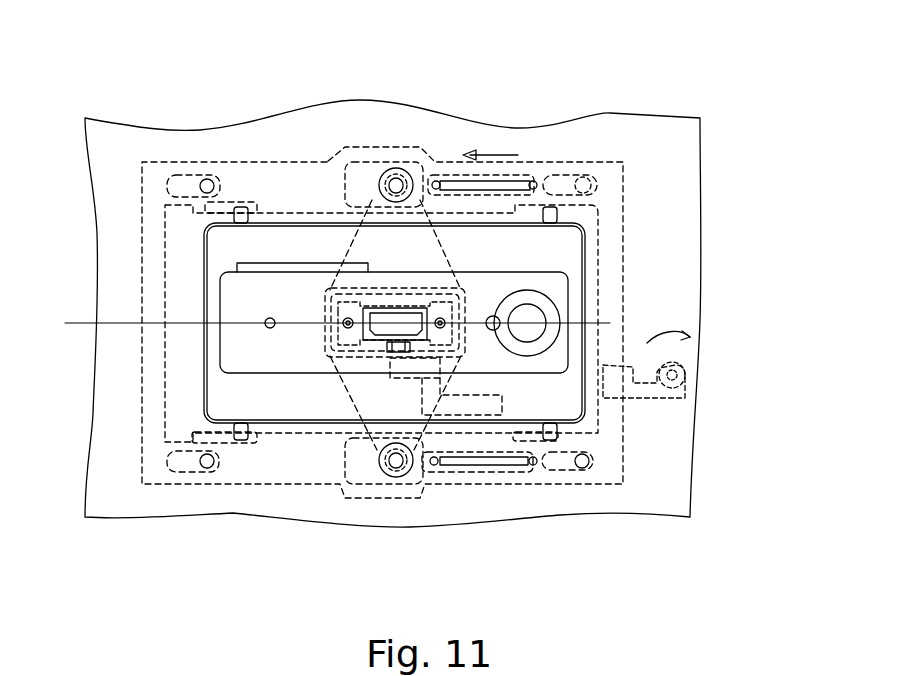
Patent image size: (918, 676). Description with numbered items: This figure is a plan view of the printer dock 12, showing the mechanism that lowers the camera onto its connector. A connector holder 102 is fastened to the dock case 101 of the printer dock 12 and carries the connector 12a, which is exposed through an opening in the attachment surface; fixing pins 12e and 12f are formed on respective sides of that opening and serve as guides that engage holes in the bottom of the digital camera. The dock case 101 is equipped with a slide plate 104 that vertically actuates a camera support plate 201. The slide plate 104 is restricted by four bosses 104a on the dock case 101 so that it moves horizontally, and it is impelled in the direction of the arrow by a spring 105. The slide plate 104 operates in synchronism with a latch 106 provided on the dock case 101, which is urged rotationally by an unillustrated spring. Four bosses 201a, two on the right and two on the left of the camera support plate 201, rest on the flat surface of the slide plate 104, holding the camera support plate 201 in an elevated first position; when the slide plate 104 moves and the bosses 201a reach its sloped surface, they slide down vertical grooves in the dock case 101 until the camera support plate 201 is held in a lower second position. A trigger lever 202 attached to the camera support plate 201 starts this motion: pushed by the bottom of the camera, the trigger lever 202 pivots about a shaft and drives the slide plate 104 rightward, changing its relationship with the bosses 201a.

The printer dock 12 is at (647, 97).
The dock case 101 is at (117, 508).
The connector holder 102 is at (380, 248).
The slide plate 104 is at (212, 484).
The bosses 104a is at (167, 183).
The spring 105 is at (500, 465).
The latch 106 is at (650, 400).
The connector 12a is at (367, 310).
The fixing pin 12e is at (272, 328).
The fixing pin 12f is at (494, 316).
The camera support plate 201 is at (558, 410).
The bosses 201a is at (240, 443).
The trigger lever 202 is at (457, 407).